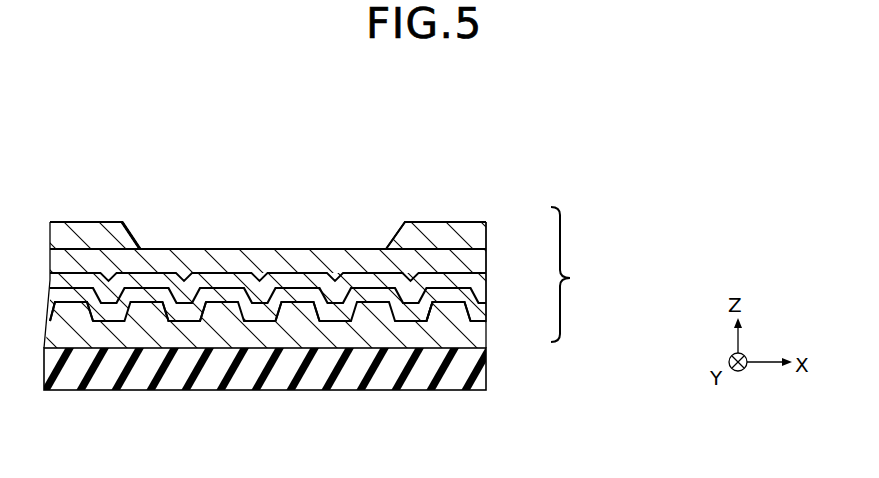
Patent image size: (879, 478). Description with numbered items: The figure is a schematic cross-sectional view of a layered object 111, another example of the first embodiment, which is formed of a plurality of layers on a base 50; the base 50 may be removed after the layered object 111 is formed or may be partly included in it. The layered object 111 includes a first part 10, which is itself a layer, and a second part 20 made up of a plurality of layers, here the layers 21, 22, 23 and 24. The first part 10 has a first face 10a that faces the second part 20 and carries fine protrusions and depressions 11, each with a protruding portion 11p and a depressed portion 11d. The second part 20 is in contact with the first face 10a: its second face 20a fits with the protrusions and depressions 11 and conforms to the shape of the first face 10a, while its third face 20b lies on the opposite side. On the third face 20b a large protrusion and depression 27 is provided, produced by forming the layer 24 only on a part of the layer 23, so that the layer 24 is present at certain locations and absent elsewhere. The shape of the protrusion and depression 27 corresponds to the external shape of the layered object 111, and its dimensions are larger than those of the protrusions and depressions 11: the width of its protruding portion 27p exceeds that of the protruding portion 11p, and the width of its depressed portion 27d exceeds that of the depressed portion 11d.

The first part 10 is at (486, 335).
The first face 10a is at (445, 303).
The protrusions and depressions 11 is at (77, 306).
The depressed portion 11d is at (186, 310).
The protruding portion 11p is at (298, 306).
The second part 20 is at (327, 274).
The second face 20a is at (441, 301).
The third face 20b is at (417, 221).
The layer 21 is at (486, 318).
The layer 22 is at (486, 290).
The layer 23 is at (486, 253).
The layer 24 is at (486, 238).
The protrusion and depression 27 is at (128, 230).
The protruding portion 27p is at (68, 222).
The depressed portion 27d is at (238, 248).
The base 50 is at (486, 375).
The layered object 111 is at (660, 240).